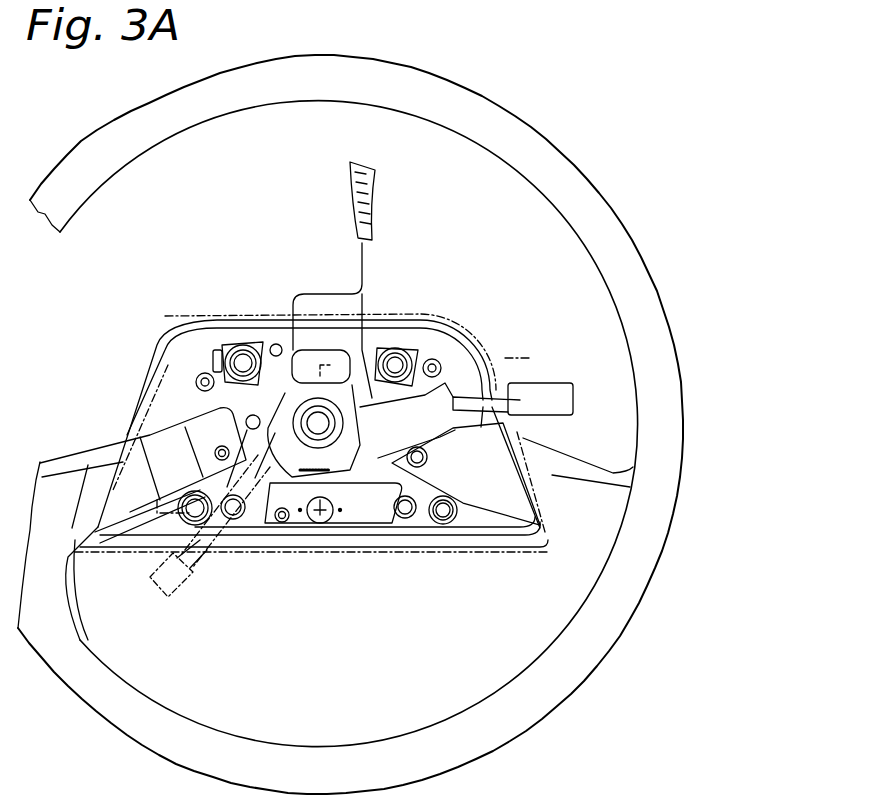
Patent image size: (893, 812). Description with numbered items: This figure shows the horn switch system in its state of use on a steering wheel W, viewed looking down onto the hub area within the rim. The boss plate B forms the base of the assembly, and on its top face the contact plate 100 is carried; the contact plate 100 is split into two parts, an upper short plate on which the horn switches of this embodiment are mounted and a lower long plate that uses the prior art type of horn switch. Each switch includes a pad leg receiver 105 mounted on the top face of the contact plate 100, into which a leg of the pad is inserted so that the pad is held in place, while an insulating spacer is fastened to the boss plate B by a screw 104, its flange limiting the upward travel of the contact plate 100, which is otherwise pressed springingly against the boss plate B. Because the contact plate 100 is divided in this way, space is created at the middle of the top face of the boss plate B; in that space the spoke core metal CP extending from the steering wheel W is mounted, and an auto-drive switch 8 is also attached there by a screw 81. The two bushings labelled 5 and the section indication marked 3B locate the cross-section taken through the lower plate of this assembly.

The steering wheel W is at (500, 735).
The boss plate B is at (184, 400).
The spoke core metal CP is at (155, 442).
The bushing 5 is at (232, 343).
The contact plate 100 is at (370, 350).
The screw 81 is at (440, 370).
The auto-drive switch 8 is at (453, 398).
The screw 104 is at (410, 520).
The pad leg receiver 105 is at (447, 525).
The section line 3B is at (335, 451).